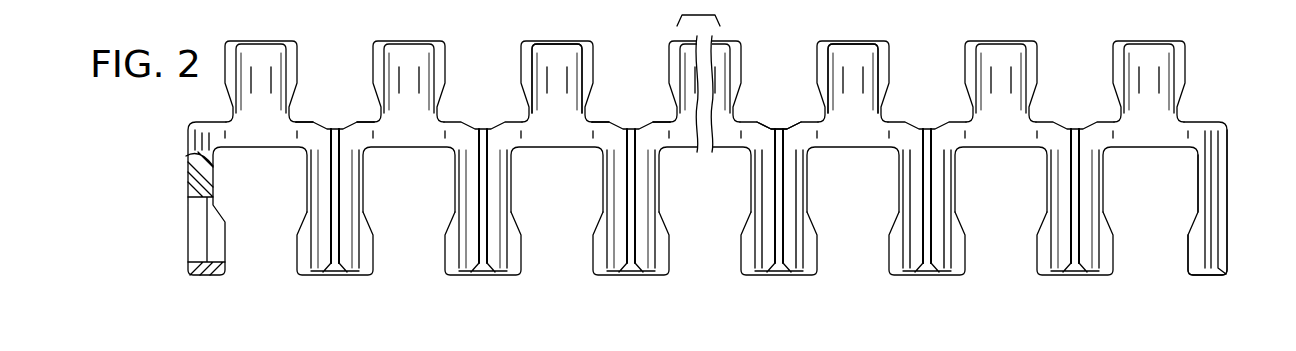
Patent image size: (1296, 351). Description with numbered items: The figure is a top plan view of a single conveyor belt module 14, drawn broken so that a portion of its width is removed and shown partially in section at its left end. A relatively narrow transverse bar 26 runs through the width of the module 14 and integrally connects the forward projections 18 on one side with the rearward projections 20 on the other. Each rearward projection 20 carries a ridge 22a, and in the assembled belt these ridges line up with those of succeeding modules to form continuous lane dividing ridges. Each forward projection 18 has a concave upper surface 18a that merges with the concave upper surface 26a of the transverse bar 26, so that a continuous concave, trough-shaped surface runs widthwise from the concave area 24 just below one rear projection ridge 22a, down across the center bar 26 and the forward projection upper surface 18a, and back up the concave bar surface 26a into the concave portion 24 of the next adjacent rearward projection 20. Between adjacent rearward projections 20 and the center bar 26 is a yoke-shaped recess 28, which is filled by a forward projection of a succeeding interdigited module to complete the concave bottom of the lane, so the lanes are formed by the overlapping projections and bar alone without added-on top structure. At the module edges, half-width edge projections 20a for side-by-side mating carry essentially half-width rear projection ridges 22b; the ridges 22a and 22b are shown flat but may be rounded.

The module 14 is at (1205, 55).
The forward projections 18 is at (407, 41).
The concave upper surface 18a is at (544, 48).
The rearward projections 20 is at (631, 273).
The edge projections 20a is at (1215, 273).
The ridges 22a is at (335, 243).
The half-width rear projection ridges 22b is at (1227, 187).
The concave area 24 is at (793, 250).
The transverse bar 26 is at (510, 128).
The concave upper surface of the transverse bar 26a is at (840, 128).
The yoke-shaped recess 28 is at (413, 213).